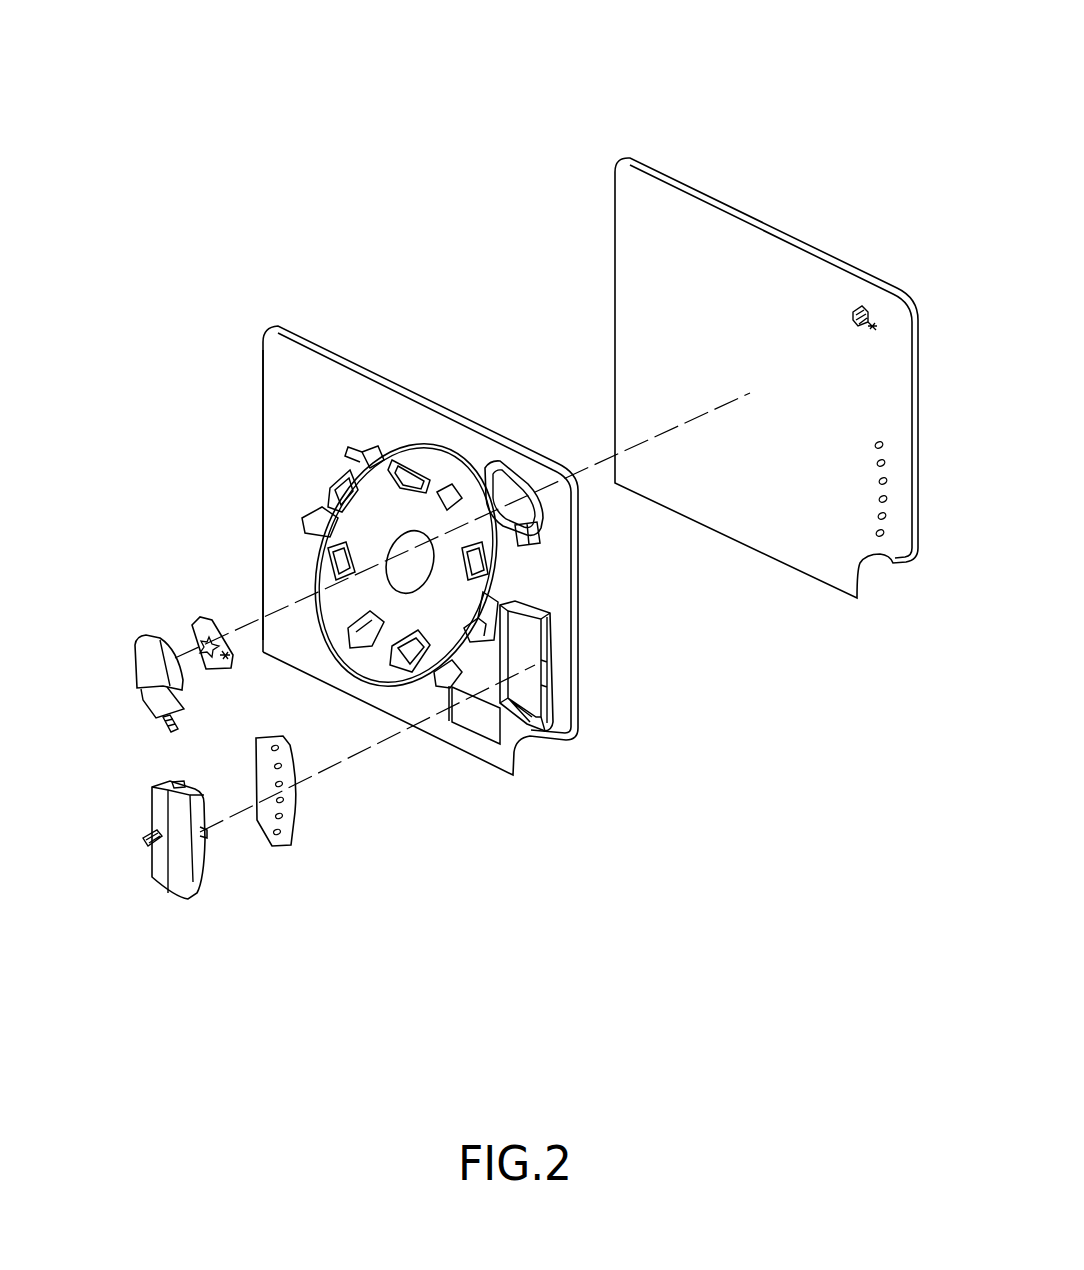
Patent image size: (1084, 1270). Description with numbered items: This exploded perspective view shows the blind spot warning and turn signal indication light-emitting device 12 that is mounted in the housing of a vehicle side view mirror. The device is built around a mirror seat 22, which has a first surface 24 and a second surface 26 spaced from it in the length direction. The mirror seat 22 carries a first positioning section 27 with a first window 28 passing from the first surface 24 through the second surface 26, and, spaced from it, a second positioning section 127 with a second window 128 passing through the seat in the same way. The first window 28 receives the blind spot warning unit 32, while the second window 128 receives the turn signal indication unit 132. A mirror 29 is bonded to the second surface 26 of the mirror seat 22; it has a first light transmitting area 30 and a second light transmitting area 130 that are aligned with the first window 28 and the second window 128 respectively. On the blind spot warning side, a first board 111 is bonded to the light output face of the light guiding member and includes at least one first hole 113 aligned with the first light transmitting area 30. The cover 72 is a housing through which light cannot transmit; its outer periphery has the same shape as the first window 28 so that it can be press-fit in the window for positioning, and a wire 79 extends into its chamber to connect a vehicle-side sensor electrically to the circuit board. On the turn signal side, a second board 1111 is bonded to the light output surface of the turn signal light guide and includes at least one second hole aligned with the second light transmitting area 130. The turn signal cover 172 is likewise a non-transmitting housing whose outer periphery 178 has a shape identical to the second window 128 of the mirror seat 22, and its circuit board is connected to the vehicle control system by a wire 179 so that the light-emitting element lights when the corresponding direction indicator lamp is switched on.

The blind spot warning and turn signal indication light-emitting device 12 is at (483, 128).
The mirror seat 22 is at (278, 352).
The first surface 24 is at (286, 418).
The second surface 26 is at (343, 352).
The first positioning section 27 is at (540, 518).
The first window 28 is at (500, 463).
The mirror 29 is at (712, 198).
The first light transmitting area 30 is at (858, 311).
The blind spot warning unit 32 is at (148, 577).
The cover 72 is at (141, 657).
The wire 79 is at (180, 724).
The first board 111 is at (222, 668).
The first hole 113 is at (205, 617).
The second positioning section 127 is at (553, 678).
The second window 128 is at (525, 632).
The second light transmitting area 130 is at (879, 538).
The turn signal indication unit 132 is at (283, 933).
The turn signal cover 172 is at (160, 808).
The outer periphery 178 is at (203, 863).
The wire 179 is at (147, 846).
The second board 1111 is at (287, 807).